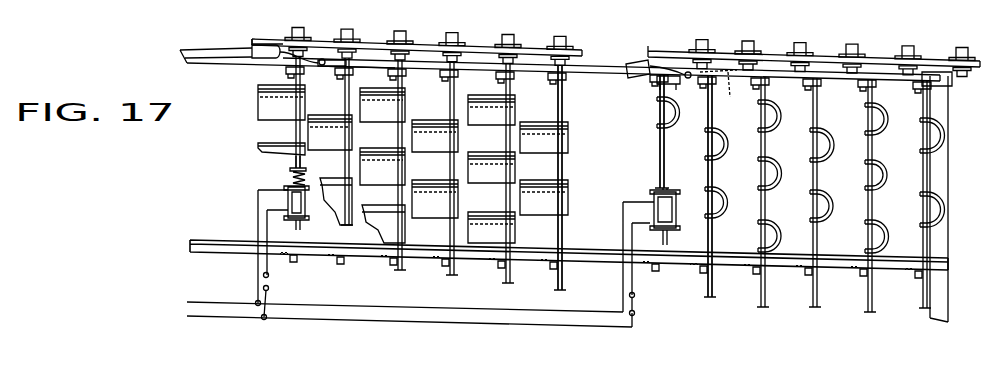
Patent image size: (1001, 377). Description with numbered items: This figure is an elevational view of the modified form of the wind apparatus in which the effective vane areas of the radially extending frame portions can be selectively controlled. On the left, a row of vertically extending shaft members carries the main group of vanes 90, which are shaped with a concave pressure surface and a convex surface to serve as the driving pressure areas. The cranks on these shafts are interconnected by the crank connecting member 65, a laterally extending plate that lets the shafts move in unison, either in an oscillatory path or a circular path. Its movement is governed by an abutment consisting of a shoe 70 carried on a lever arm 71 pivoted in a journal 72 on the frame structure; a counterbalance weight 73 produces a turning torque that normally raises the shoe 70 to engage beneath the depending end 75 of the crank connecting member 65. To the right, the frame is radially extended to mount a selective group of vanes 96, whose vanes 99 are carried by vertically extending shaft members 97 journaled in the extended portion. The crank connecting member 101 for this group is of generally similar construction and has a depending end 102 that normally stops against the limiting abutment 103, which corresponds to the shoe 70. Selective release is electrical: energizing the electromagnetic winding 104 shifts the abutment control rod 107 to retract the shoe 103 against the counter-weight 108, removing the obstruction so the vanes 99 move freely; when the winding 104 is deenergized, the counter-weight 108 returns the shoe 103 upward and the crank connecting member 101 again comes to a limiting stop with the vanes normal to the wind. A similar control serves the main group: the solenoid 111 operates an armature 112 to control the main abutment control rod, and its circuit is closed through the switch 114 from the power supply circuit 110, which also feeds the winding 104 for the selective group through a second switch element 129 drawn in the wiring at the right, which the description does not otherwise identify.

The crank connecting member 65 is at (435, 40).
The shoe 70 is at (264, 56).
The lever arm 71 is at (283, 47).
The journal 72 is at (322, 60).
The counterbalance weight 73 is at (362, 69).
The depending end 75 is at (250, 44).
The vanes 90 is at (264, 110).
The selective group of vanes 96 is at (787, 100).
The vertically extending shaft members 97 is at (562, 108).
The vanes 99 is at (716, 135).
The crank connecting member 101 is at (725, 52).
The depending end 102 is at (642, 57).
The limiting abutment 103 is at (638, 80).
The electromagnetic winding 104 is at (652, 212).
The abutment control rod 107 is at (664, 170).
The counter-weight 108 is at (725, 93).
The power supply circuit 110 is at (193, 302).
The solenoid 111 is at (256, 200).
The armature 112 is at (288, 177).
The switch 114 is at (288, 286).
The switch 129 is at (638, 305).